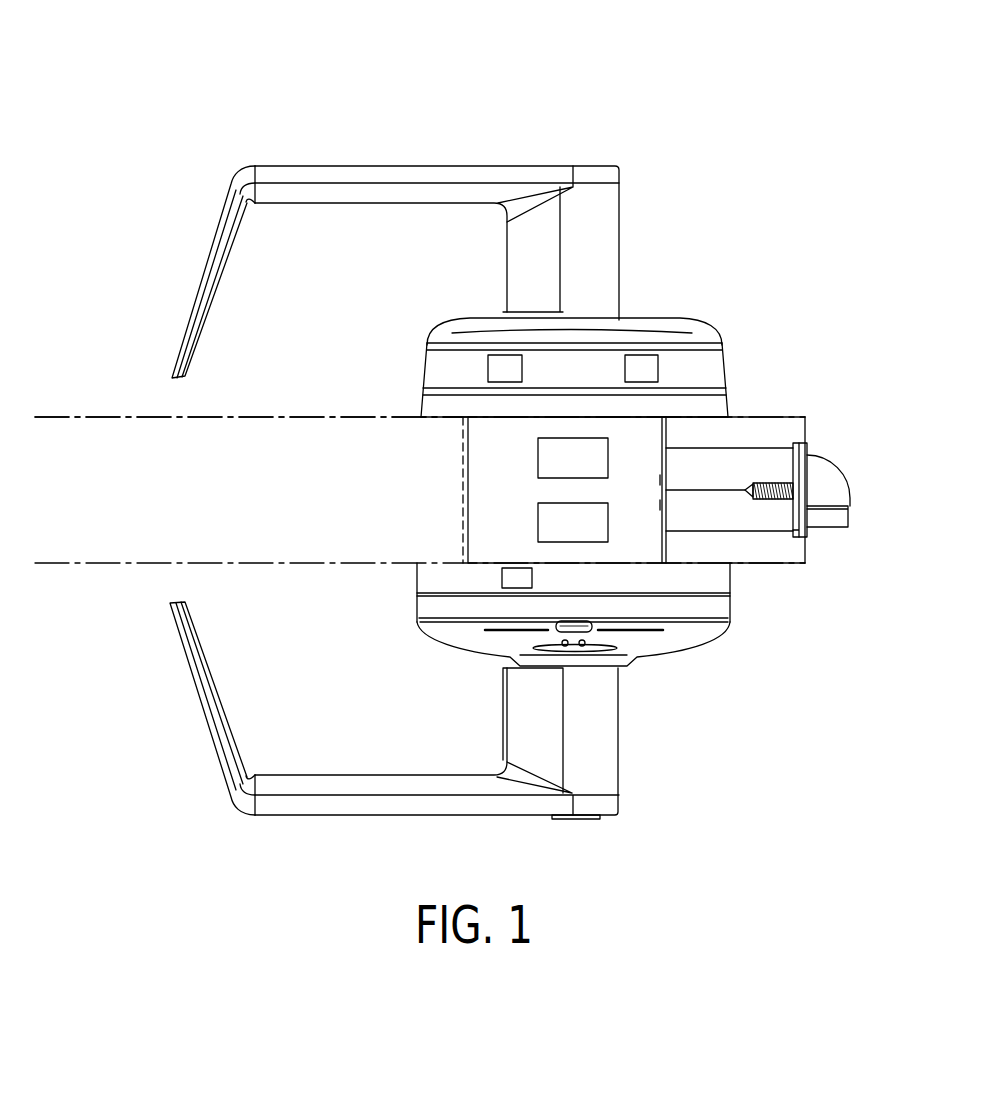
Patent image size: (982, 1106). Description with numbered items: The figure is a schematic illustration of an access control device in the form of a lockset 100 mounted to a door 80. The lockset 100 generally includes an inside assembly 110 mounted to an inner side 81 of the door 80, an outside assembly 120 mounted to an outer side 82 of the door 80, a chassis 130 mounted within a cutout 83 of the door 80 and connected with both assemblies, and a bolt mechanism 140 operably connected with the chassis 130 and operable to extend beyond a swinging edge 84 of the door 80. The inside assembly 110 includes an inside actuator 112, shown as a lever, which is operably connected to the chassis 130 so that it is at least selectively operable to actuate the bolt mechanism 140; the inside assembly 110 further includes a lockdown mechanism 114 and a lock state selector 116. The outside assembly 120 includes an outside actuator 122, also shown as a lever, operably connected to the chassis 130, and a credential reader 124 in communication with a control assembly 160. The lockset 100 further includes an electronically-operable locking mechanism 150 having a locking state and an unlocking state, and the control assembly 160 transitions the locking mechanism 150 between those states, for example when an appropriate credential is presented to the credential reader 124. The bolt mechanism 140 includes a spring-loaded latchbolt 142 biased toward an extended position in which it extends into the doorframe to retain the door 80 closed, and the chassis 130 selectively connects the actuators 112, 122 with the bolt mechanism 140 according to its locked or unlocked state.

The lockset 100 is at (162, 138).
The door 80 is at (100, 447).
The inner side 81 is at (349, 416).
The outer side 82 is at (340, 568).
The cutout 83 is at (462, 490).
The inside assembly 110 is at (762, 252).
The inside actuator 112 is at (620, 216).
The lockdown mechanism 114 is at (490, 353).
The lock state selector 116 is at (648, 353).
The outside assembly 120 is at (758, 650).
The outside actuator 122 is at (620, 740).
The credential reader 124 is at (502, 574).
The chassis 130 is at (466, 458).
The bolt mechanism 140 is at (766, 420).
The bolt 142 is at (841, 482).
The swinging edge 84 is at (808, 422).
The locking mechanism 150 is at (538, 450).
The control assembly 160 is at (538, 522).